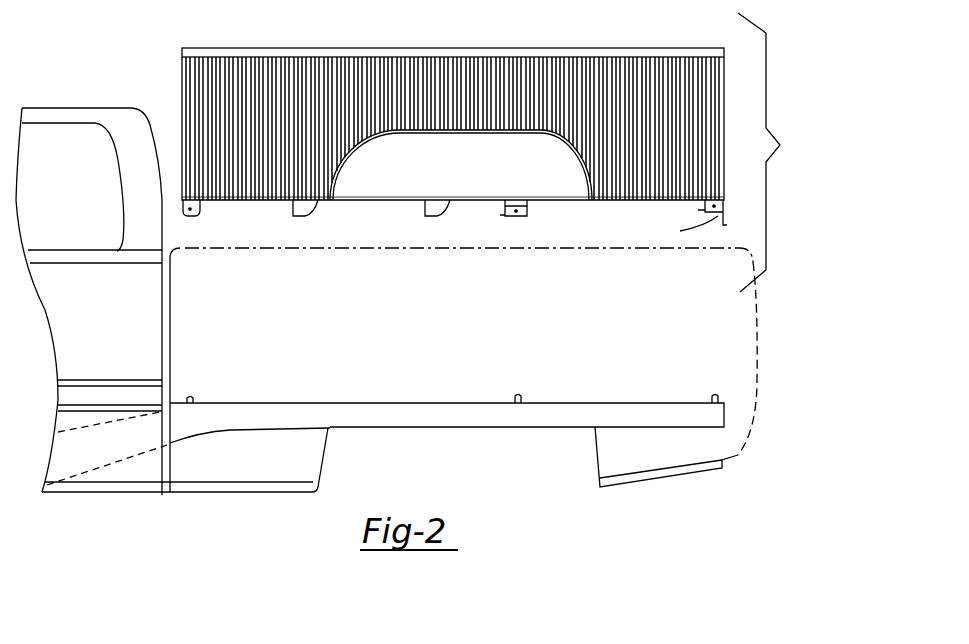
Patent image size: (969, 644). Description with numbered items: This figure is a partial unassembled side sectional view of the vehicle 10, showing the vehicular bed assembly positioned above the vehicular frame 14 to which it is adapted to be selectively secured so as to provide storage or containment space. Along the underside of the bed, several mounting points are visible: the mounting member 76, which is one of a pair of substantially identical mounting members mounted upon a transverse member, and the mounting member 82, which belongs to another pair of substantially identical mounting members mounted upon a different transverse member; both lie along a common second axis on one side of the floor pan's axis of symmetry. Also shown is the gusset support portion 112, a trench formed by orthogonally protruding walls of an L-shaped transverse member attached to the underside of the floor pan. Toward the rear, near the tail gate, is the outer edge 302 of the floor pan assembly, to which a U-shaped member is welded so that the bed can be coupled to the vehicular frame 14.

The vehicle 10 is at (90, 137).
The vehicular frame 14 is at (460, 430).
The mounting member 76 is at (187, 218).
The gusset support portion 112 is at (297, 218).
The mounting member 82 is at (517, 218).
The outer edge 302 is at (678, 242).